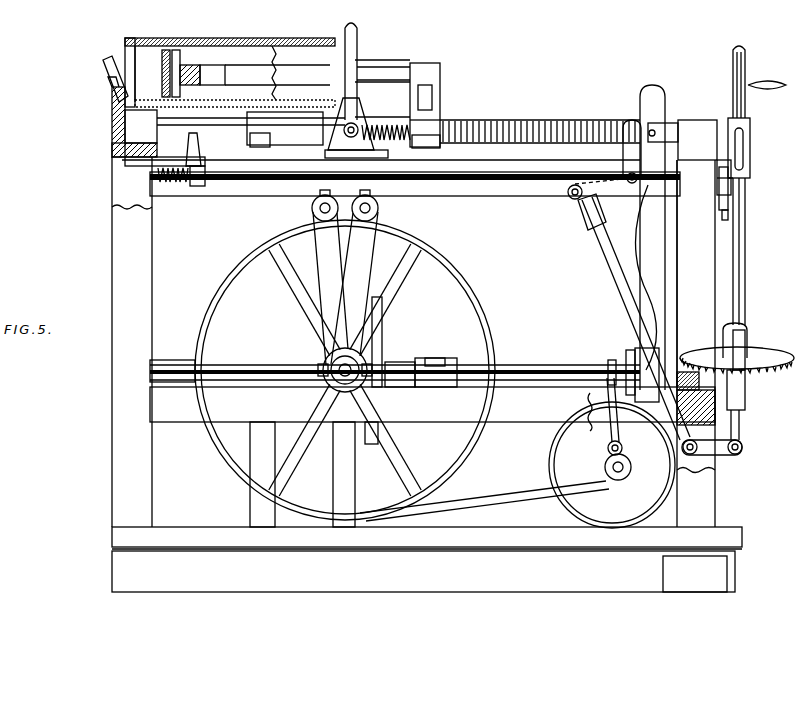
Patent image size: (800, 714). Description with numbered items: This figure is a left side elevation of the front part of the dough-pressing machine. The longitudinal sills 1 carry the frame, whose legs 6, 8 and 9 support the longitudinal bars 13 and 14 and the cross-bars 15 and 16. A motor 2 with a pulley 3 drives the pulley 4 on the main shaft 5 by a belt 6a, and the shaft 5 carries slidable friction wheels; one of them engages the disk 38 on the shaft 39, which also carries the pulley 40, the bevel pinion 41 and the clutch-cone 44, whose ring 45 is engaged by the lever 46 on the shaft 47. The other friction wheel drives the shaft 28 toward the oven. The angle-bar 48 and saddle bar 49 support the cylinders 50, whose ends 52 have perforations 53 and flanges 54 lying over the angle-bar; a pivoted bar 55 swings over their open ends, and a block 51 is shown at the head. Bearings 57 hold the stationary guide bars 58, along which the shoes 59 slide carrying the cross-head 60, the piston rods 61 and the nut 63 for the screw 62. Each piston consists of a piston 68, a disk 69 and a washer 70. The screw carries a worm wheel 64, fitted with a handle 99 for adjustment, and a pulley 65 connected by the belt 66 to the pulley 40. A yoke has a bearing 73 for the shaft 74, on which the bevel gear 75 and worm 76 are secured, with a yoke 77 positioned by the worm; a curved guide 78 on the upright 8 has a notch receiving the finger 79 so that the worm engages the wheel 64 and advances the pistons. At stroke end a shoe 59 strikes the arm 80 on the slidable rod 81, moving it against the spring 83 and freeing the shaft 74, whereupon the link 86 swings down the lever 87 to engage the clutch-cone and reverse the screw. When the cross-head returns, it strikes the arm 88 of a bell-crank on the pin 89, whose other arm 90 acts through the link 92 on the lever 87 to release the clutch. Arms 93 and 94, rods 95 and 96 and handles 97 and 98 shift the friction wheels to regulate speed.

The longitudinal sills 1 is at (412, 564).
The motor 2 is at (612, 465).
The pulley 3 is at (605, 470).
The pulley 4 is at (458, 462).
The main shaft 5 is at (340, 380).
The leg 6 is at (688, 273).
The belt 6a is at (490, 506).
The leg 8 is at (696, 343).
The leg 9 is at (132, 342).
The longitudinal bar 13 is at (415, 184).
The longitudinal bar 14 is at (432, 404).
The cross-bar 15 is at (717, 188).
The cross-bar 16 is at (715, 410).
The shaft 28 is at (172, 368).
The disk 38 is at (382, 352).
The shaft 39 is at (560, 366).
The pulley 40 is at (638, 402).
The bevel pinion 41 is at (688, 372).
The clutch-cone 44 is at (626, 360).
The ring 45 is at (608, 368).
The lever 46 is at (608, 400).
The shaft 47 is at (608, 450).
The angle-bar 48 is at (112, 132).
The saddle bar 49 is at (326, 146).
The cylinders 50 is at (267, 77).
The block 51 is at (141, 126).
The cylinder ends 52 is at (125, 52).
The perforations 53 is at (103, 62).
The flanges 54 is at (110, 98).
The pivoted bar 55 is at (353, 36).
The bearings 57 is at (697, 140).
The guide bars 58 is at (210, 124).
The shoes 59 is at (328, 129).
The cross-head 60 is at (432, 98).
The piston rods 61 is at (380, 70).
The screw 62 is at (525, 120).
The nut 63 is at (440, 147).
The worm wheel 64 is at (746, 110).
The pulley 65 is at (640, 97).
The belt 66 is at (646, 228).
The piston 68 is at (190, 65).
The disk 69 is at (165, 50).
The washer 70 is at (176, 50).
The bearing 73 is at (747, 330).
The shaft 74 is at (745, 258).
The bevel gear 75 is at (770, 354).
The worm 76 is at (750, 132).
The yoke 77 is at (743, 150).
The curved guide 78 is at (728, 215).
The finger 79 is at (728, 200).
The arm 80 is at (200, 149).
The slidable rod 81 is at (253, 198).
The spring 83 is at (175, 185).
The link 86 is at (745, 395).
The lever 87 is at (714, 455).
The arm 88 is at (624, 148).
The pin 89 is at (630, 184).
The arm 90 is at (573, 200).
The link 92 is at (608, 272).
The arm 93 is at (324, 252).
The arm 94 is at (370, 252).
The transversely slidable rod 95 is at (312, 209).
The transversely slidable rod 96 is at (378, 210).
The operating handle 97 is at (320, 191).
The operating handle 98 is at (370, 191).
The handle 99 is at (760, 85).